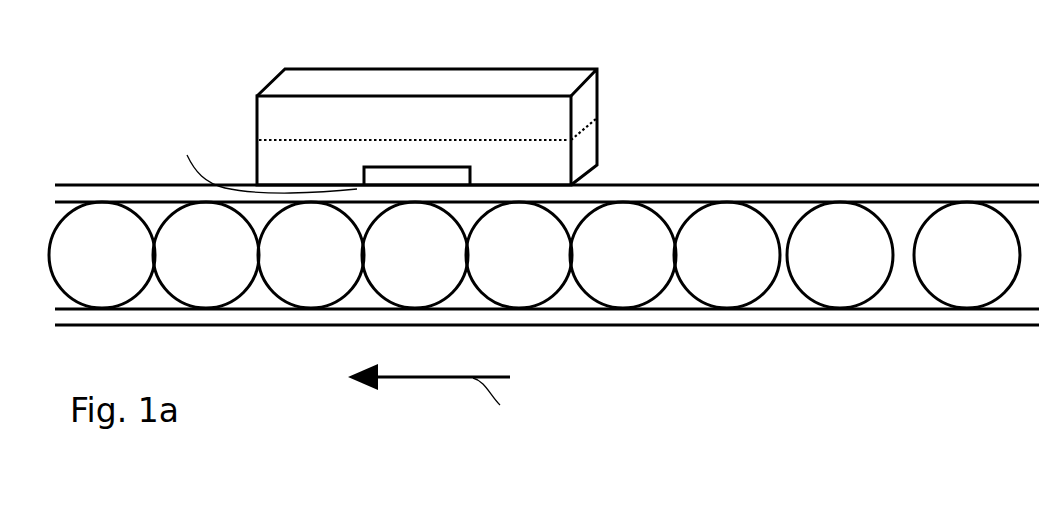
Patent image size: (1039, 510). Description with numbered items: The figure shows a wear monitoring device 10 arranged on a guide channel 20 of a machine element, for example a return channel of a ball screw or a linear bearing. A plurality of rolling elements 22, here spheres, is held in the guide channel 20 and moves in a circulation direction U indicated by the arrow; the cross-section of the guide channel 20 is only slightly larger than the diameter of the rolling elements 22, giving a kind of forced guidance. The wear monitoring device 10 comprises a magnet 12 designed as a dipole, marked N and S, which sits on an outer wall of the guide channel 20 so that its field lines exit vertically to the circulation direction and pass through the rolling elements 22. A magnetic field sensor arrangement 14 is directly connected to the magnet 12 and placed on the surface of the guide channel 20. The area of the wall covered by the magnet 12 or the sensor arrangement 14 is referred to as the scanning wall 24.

The wear monitoring device 10 is at (112, 115).
The magnet 12 is at (383, 125).
The magnetic field sensor arrangement 14 is at (380, 172).
The guide channel 20 is at (888, 320).
The rolling elements 22 is at (863, 233).
The scanning wall 24 is at (263, 160).